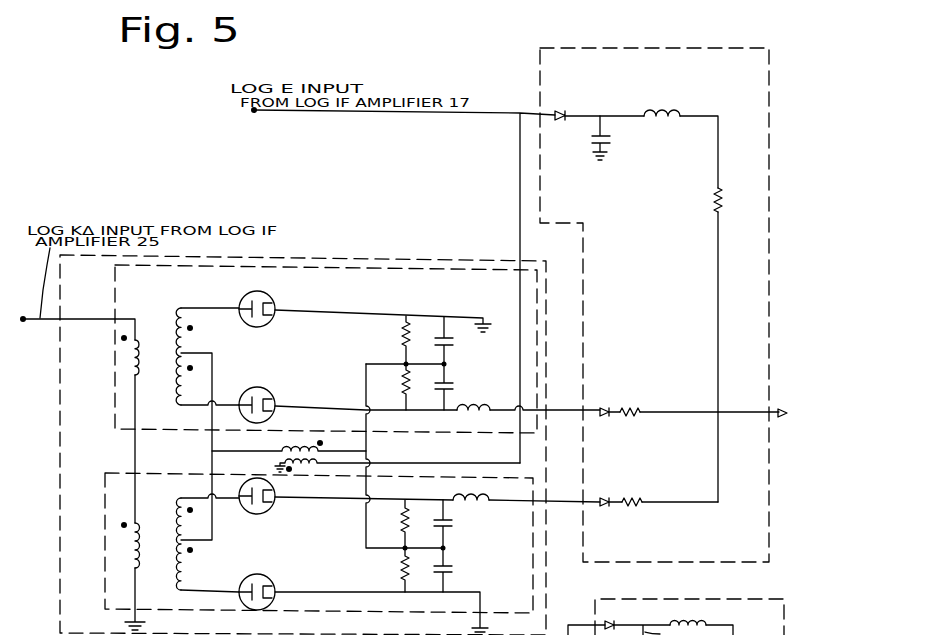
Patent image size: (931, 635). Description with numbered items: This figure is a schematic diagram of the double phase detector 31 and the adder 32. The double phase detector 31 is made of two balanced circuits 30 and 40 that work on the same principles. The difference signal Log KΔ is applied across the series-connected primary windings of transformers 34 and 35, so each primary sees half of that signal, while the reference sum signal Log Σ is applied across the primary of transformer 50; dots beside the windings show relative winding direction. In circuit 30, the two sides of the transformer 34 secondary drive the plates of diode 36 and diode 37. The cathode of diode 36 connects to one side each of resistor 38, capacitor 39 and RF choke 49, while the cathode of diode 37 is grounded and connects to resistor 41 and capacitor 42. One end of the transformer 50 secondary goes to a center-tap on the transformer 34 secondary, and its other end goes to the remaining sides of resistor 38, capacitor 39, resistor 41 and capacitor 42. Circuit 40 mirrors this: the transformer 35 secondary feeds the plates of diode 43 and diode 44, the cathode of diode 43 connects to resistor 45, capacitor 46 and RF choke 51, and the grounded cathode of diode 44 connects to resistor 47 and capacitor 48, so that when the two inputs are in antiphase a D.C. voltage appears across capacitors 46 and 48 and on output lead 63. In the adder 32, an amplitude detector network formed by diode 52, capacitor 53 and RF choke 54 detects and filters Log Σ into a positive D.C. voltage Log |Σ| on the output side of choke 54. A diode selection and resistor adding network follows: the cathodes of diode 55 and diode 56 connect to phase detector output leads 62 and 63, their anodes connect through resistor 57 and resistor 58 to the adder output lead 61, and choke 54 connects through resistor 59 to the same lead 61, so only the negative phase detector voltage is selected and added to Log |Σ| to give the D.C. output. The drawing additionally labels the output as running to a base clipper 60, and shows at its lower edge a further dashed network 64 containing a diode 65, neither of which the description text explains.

The balanced circuit 30 is at (114, 334).
The double phase detector 31 is at (421, 258).
The adder 32 is at (768, 262).
The transformer 34 is at (177, 413).
The transformer 35 is at (169, 534).
The diode 36 is at (286, 373).
The diode 37 is at (270, 297).
The resistor 38 is at (404, 378).
The capacitor 39 is at (451, 384).
The balanced circuit 40 is at (105, 546).
The resistor 41 is at (412, 334).
The capacitor 42 is at (452, 345).
The diode 43 is at (271, 508).
The diode 44 is at (270, 580).
The resistor 45 is at (403, 526).
The capacitor 46 is at (451, 525).
The resistor 47 is at (401, 574).
The capacitor 48 is at (451, 572).
The RF choke 49 is at (478, 406).
The transformer 50 is at (366, 456).
The RF choke 51 is at (485, 506).
The diode 52 is at (564, 113).
The capacitor 53 is at (608, 146).
The RF choke 54 is at (665, 111).
The diode 55 is at (606, 406).
The diode 56 is at (606, 494).
The resistor 57 is at (631, 410).
The resistor 58 is at (633, 498).
The resistor 59 is at (721, 194).
The base clipper 60 is at (776, 412).
The adder output lead 61 is at (749, 392).
The phase detector output lead 62 is at (528, 412).
The phase detector output lead 63 is at (520, 502).
The network 64 is at (784, 620).
The diode 65 is at (613, 622).